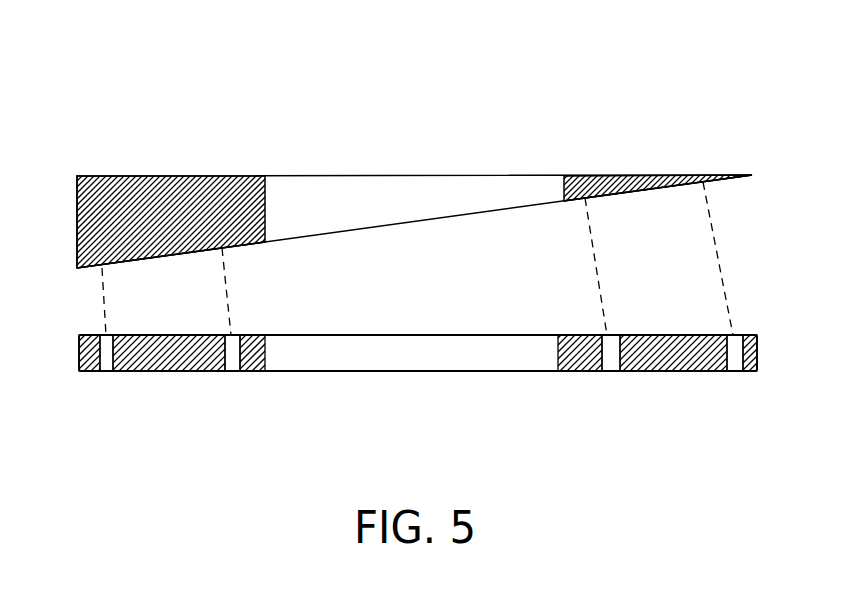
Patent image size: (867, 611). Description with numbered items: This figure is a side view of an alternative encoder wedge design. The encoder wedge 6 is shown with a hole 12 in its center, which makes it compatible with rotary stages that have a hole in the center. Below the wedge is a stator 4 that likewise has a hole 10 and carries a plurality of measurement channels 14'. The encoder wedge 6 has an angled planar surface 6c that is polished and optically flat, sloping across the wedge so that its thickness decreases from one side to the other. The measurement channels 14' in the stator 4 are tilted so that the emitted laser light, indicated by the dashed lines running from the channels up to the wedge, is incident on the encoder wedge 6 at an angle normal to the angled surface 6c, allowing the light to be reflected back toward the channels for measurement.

The hole 12 is at (390, 167).
The encoder wedge 6 is at (182, 176).
The angled planar surface 6c is at (247, 247).
The hole 10 is at (417, 342).
The stator 4 is at (359, 372).
The measurement channels 14' is at (434, 384).